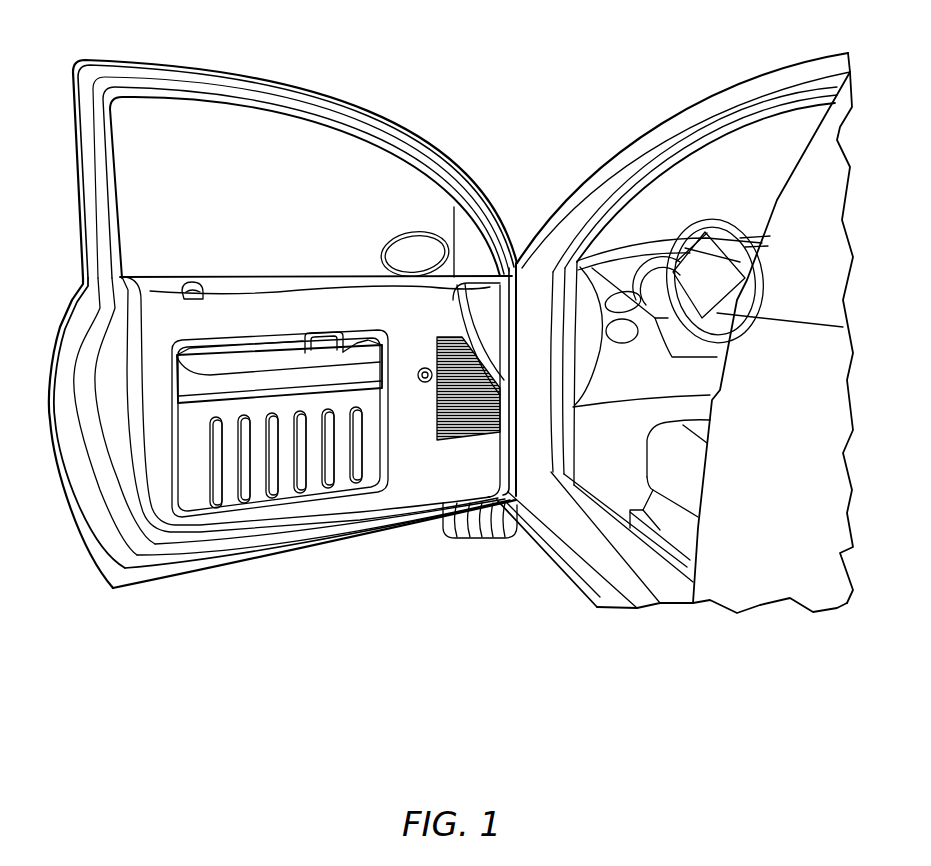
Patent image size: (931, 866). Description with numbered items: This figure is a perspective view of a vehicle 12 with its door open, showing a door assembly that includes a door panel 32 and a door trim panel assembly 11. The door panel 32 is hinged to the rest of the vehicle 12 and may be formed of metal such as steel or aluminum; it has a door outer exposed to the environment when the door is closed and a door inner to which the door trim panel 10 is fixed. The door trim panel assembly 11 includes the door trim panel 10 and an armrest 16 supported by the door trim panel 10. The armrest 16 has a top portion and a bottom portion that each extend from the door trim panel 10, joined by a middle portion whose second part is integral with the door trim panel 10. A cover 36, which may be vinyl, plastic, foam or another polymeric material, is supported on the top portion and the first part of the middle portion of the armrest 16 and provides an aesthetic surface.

The door trim panel 10 is at (428, 475).
The door trim panel assembly 11 is at (286, 70).
The vehicle 12 is at (735, 75).
The armrest 16 is at (295, 380).
The door panel 32 is at (76, 320).
The cover 36 is at (265, 363).